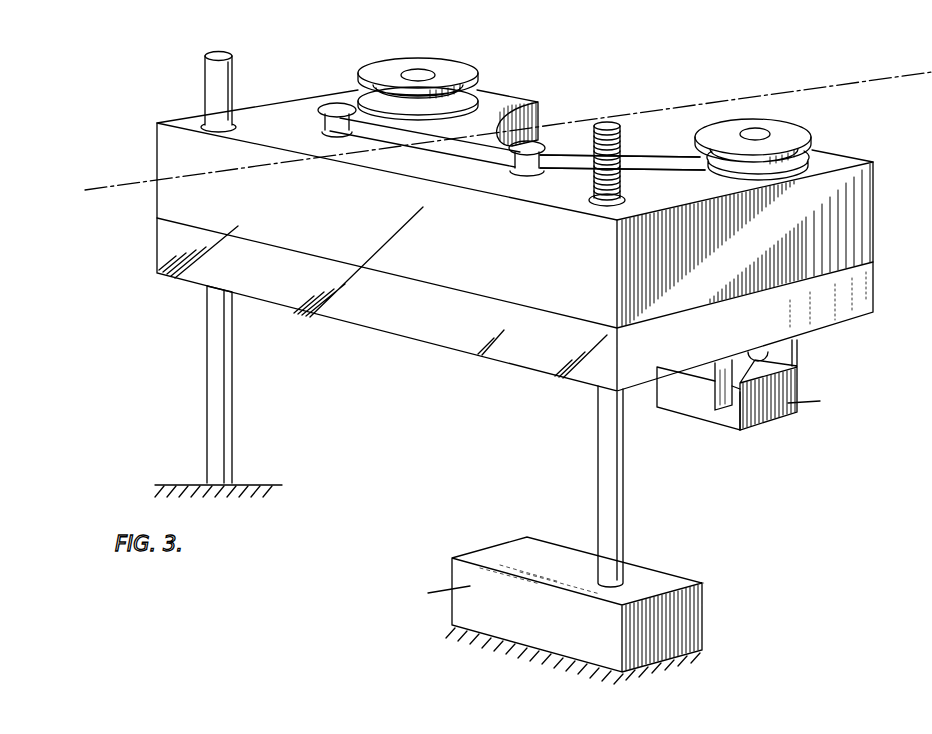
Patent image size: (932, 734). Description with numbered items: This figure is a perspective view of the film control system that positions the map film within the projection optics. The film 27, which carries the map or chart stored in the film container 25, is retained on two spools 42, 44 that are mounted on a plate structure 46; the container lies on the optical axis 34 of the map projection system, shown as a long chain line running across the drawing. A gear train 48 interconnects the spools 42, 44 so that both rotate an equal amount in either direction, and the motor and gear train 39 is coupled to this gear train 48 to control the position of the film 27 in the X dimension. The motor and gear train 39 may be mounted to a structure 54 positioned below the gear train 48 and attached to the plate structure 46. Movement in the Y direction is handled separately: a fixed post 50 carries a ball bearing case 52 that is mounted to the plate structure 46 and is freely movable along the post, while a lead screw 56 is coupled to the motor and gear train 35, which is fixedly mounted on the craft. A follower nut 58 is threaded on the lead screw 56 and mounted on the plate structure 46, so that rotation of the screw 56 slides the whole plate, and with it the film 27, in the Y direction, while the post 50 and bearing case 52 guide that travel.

The film container 25 is at (428, 481).
The film 27 is at (647, 157).
The axis 34 is at (884, 62).
The motor and gear train 35 is at (693, 603).
The motor and gear train 39 is at (758, 413).
The spool 42 is at (468, 69).
The spool 44 is at (812, 131).
The plate structure 46 is at (472, 177).
The gear train 48 is at (862, 291).
The fixed post 50 is at (218, 387).
The ball bearing case 52 is at (204, 130).
The structure 54 is at (401, 338).
The lead screw 56 is at (602, 446).
The follower nut 58 is at (603, 207).